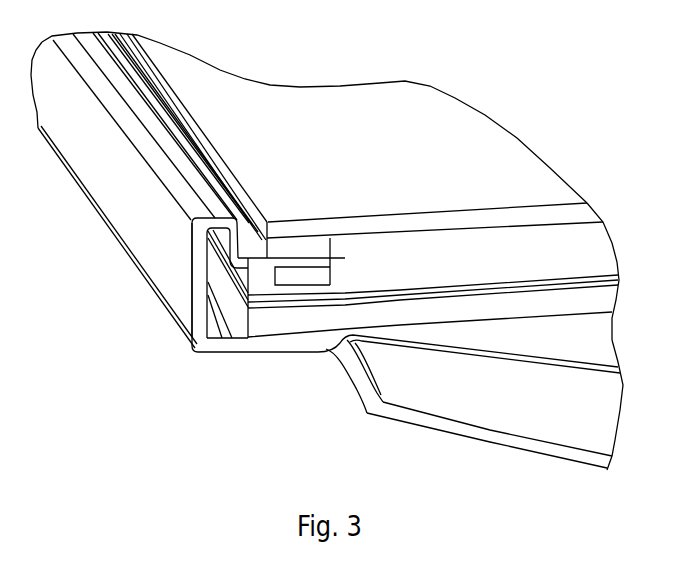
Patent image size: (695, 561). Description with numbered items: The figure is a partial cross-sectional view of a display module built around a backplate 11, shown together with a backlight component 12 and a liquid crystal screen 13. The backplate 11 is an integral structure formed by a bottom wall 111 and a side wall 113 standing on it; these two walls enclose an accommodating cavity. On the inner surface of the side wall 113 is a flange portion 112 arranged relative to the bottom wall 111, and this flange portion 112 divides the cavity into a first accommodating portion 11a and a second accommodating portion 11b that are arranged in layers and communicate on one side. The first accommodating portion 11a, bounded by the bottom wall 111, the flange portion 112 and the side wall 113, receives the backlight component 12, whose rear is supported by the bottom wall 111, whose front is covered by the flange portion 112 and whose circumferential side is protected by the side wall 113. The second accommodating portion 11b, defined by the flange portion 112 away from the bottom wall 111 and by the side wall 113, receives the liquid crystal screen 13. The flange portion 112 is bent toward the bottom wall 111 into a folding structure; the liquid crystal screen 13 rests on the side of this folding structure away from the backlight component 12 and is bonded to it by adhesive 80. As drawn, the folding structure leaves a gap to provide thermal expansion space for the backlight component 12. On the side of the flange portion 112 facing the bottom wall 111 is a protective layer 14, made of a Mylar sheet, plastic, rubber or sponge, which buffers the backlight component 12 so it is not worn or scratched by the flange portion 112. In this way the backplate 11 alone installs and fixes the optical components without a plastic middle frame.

The backplate 11 is at (367, 412).
The bottom wall 111 is at (322, 352).
The flange portion 112 is at (204, 351).
The side wall 113 is at (108, 178).
The first accommodating portion 11a is at (190, 308).
The second accommodating portion 11b is at (224, 206).
The backlight component 12 is at (502, 317).
The liquid crystal screen 13 is at (403, 228).
The protective layer 14 is at (312, 287).
The adhesive 80 is at (292, 248).